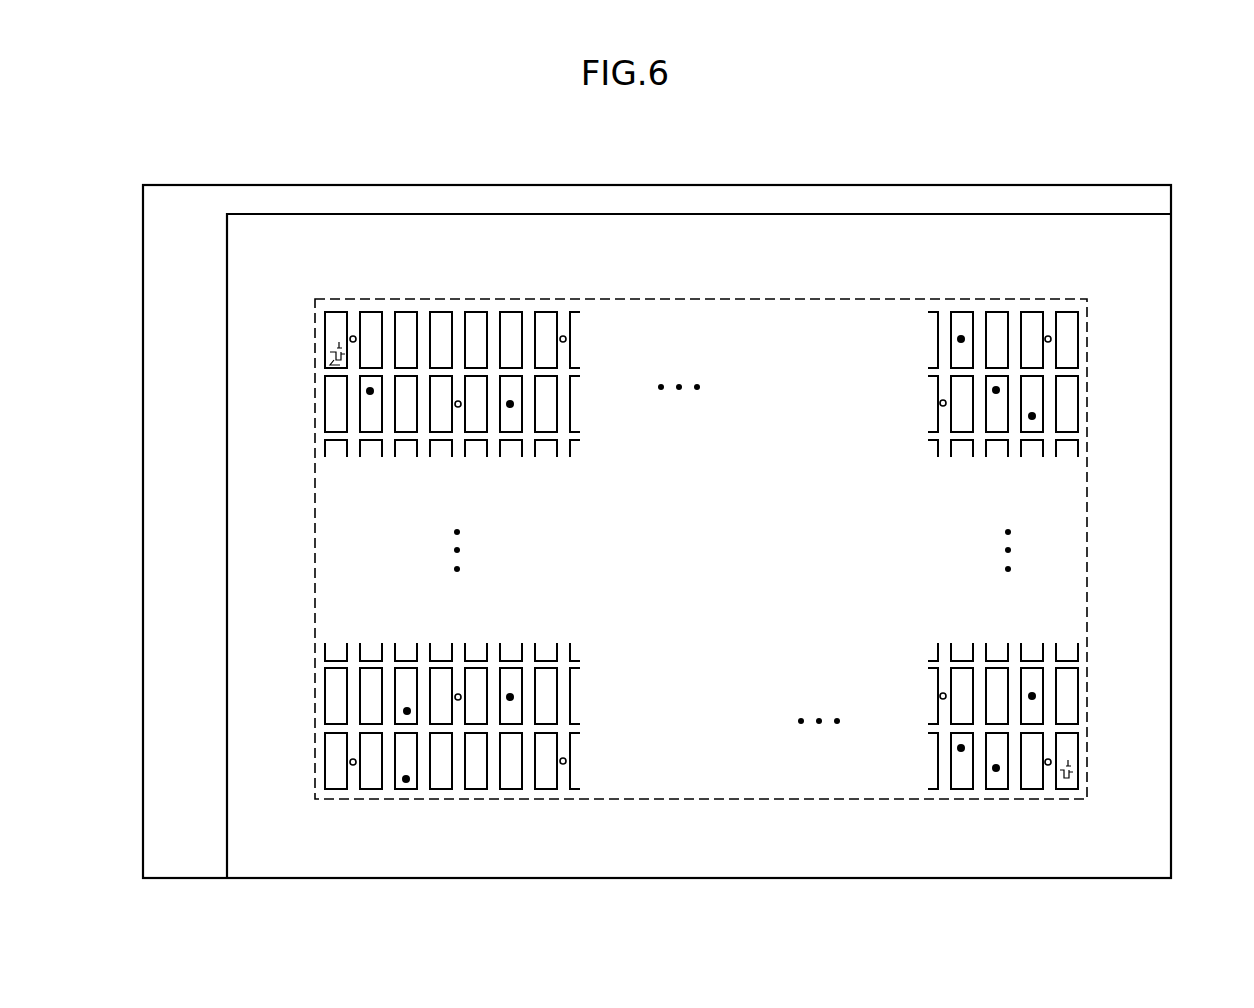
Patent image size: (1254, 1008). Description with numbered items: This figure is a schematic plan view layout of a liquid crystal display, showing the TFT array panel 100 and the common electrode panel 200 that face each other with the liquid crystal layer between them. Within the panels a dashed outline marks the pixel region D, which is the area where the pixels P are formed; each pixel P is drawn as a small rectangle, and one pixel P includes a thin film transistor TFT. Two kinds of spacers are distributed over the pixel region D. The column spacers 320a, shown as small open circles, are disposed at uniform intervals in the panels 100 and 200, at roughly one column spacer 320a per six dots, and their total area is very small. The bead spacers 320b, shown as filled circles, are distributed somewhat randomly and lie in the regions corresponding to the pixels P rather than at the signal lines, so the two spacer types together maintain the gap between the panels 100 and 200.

The TFT array panel 100 is at (735, 185).
The common electrode panel 200 is at (662, 213).
The pixel P is at (960, 310).
The thin film transistor TFT is at (325, 355).
The column spacer 320a is at (1052, 338).
The bead spacer 320b is at (1036, 415).
The pixel region D is at (1087, 580).